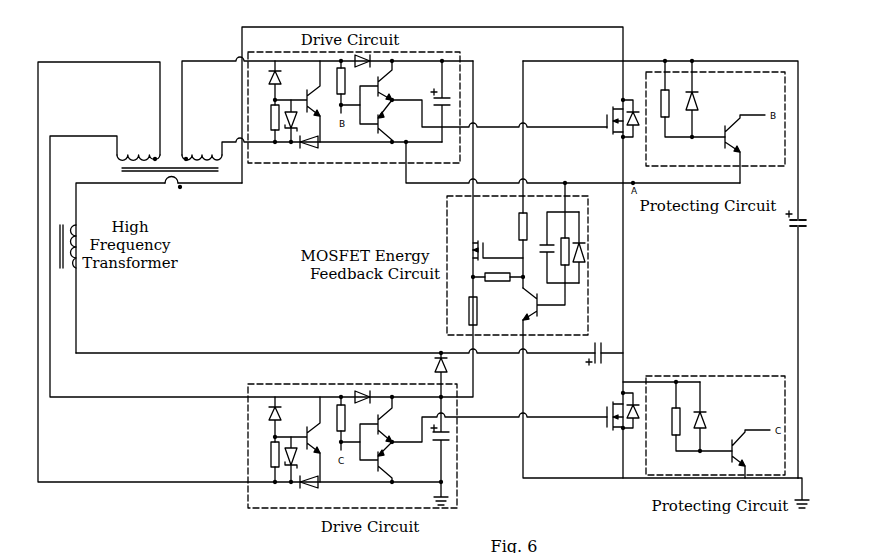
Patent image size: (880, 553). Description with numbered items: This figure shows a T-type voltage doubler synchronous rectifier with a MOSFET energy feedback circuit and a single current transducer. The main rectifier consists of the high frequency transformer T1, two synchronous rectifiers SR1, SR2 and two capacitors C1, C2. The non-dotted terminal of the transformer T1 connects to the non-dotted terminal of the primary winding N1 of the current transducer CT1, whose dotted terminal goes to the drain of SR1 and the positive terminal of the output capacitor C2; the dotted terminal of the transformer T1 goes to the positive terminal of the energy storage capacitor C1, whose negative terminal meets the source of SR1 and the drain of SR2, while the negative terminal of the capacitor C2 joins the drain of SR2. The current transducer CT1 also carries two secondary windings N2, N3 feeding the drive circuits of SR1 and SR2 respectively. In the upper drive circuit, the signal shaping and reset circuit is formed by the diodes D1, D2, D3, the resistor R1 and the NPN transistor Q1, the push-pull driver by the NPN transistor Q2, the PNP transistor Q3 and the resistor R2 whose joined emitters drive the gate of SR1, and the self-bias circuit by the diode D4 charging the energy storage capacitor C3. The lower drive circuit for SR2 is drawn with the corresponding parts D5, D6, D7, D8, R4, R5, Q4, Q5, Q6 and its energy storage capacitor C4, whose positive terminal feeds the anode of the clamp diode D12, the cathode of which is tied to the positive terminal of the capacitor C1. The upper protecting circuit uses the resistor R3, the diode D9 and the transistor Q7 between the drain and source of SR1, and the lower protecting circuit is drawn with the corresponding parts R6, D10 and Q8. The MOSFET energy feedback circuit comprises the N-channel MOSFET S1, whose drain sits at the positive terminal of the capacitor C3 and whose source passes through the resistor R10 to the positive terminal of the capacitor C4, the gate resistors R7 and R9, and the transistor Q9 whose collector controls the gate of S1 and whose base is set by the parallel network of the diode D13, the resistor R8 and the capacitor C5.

The high frequency transformer T1 is at (65, 237).
The current transducer CT1 is at (152, 169).
The primary winding N1 is at (173, 190).
The secondary winding N2 is at (202, 149).
The secondary winding N3 is at (138, 149).
The diode D1 is at (284, 80).
The diode D2 is at (298, 122).
The diode D3 is at (309, 136).
The diode D4 is at (362, 65).
The diode D5 is at (284, 417).
The zener diode D6 is at (298, 460).
The diode D7 is at (309, 476).
The diode D8 is at (362, 401).
The diode D9 is at (702, 99).
The diode D10 is at (710, 417).
The diode D12 is at (451, 375).
The diode D13 is at (580, 247).
The resistor R1 is at (267, 121).
The resistor R2 is at (332, 83).
The resistor R3 is at (693, 99).
The resistor R4 is at (267, 460).
The resistor R5 is at (332, 420).
The resistor R6 is at (693, 416).
The resistor R7 is at (517, 226).
The resistor R8 is at (561, 233).
The resistor R9 is at (498, 283).
The resistor R10 is at (463, 311).
The NPN transistor Q1 is at (305, 101).
The NPN transistor Q2 is at (367, 83).
The PNP transistor Q3 is at (377, 122).
The transistor Q4 is at (305, 439).
The transistor Q5 is at (367, 420).
The transistor Q6 is at (377, 463).
The transistor Q7 is at (745, 149).
The transistor Q8 is at (751, 454).
The transistor Q9 is at (544, 301).
The energy storage capacitor C1 is at (590, 350).
The output capacitor C2 is at (804, 226).
The energy storage capacitor C3 is at (433, 102).
The energy storage capacitor C4 is at (445, 440).
The capacitor C5 is at (557, 247).
The N-channel MOSFET S1 is at (488, 250).
The synchronous rectifier SR1 is at (623, 128).
The synchronous rectifier SR2 is at (623, 405).